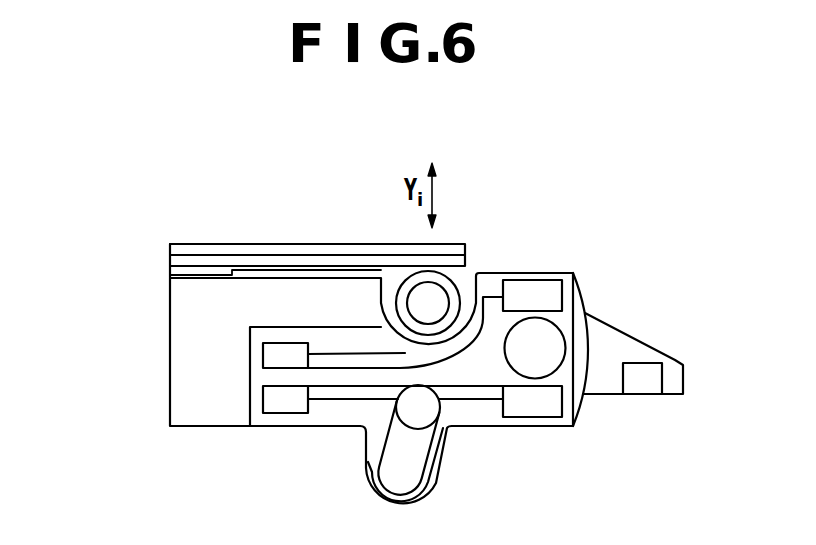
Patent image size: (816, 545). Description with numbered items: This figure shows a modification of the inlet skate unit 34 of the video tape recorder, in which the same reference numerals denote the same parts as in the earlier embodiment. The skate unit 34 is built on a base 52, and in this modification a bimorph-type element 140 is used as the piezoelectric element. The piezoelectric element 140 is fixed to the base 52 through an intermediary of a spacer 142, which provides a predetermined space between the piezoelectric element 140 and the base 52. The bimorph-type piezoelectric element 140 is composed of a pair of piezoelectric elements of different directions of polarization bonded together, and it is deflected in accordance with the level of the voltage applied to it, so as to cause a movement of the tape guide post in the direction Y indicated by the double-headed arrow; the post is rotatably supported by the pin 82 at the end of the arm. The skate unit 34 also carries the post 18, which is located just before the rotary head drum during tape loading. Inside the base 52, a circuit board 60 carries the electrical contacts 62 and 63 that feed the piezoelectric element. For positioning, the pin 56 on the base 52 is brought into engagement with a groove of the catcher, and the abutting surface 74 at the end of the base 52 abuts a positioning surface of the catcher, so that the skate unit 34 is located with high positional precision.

The skate unit 34 is at (538, 162).
The base 52 is at (180, 392).
The bimorph-type piezoelectric element 140 is at (282, 245).
The spacer 142 is at (170, 273).
The pin 82 is at (452, 293).
The circuit board 60 is at (320, 415).
The electrical contact 62 is at (552, 287).
The electrical contact 63 is at (547, 408).
The pin 56 is at (558, 347).
The abutting surface 74 is at (650, 395).
The post 18 is at (415, 458).